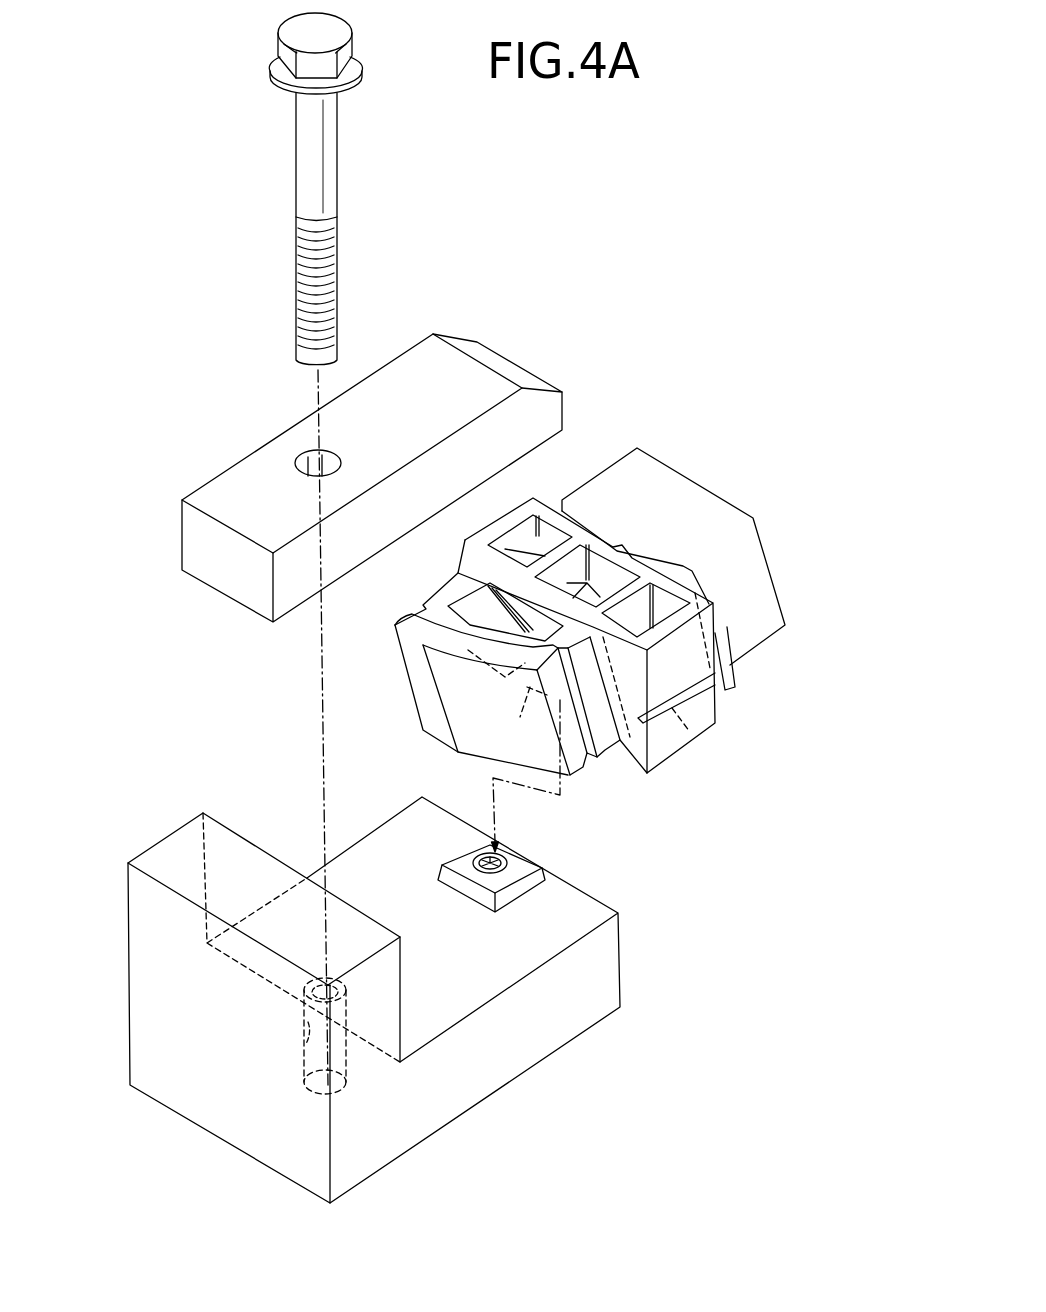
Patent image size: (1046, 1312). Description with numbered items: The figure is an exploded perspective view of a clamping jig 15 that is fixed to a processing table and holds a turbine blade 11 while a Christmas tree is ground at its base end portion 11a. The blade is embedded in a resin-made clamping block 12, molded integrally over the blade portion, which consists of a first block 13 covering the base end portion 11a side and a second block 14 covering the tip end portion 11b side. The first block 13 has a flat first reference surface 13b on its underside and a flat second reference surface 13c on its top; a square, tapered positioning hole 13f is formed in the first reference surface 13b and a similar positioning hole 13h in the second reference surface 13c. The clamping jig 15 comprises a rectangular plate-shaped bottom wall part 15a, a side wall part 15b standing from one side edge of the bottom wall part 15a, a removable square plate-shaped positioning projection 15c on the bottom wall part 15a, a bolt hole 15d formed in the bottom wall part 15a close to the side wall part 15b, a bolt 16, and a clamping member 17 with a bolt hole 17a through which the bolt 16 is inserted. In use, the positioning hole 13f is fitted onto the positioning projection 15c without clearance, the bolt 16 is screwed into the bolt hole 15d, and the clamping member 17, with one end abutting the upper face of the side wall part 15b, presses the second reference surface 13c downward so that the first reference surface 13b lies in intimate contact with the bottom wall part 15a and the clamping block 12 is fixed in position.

The turbine blade 11 is at (599, 611).
The base end portion 11a is at (755, 577).
The tip end portion 11b is at (420, 693).
The resin-made clamping block 12 is at (633, 688).
The first block 13 is at (633, 670).
The first reference surface 13b is at (705, 730).
The second reference surface 13c is at (665, 583).
The positioning hole 13f is at (545, 688).
The positioning hole 13h is at (598, 563).
The second block 14 is at (575, 777).
The clamping jig 15 is at (382, 1000).
The bottom wall part 15a is at (467, 997).
The side wall part 15b is at (147, 963).
The positioning projection 15c is at (508, 877).
The bolt hole 15d is at (304, 1020).
The bolt 16 is at (305, 150).
The clamping member 17 is at (401, 441).
The bolt hole 17a is at (308, 458).